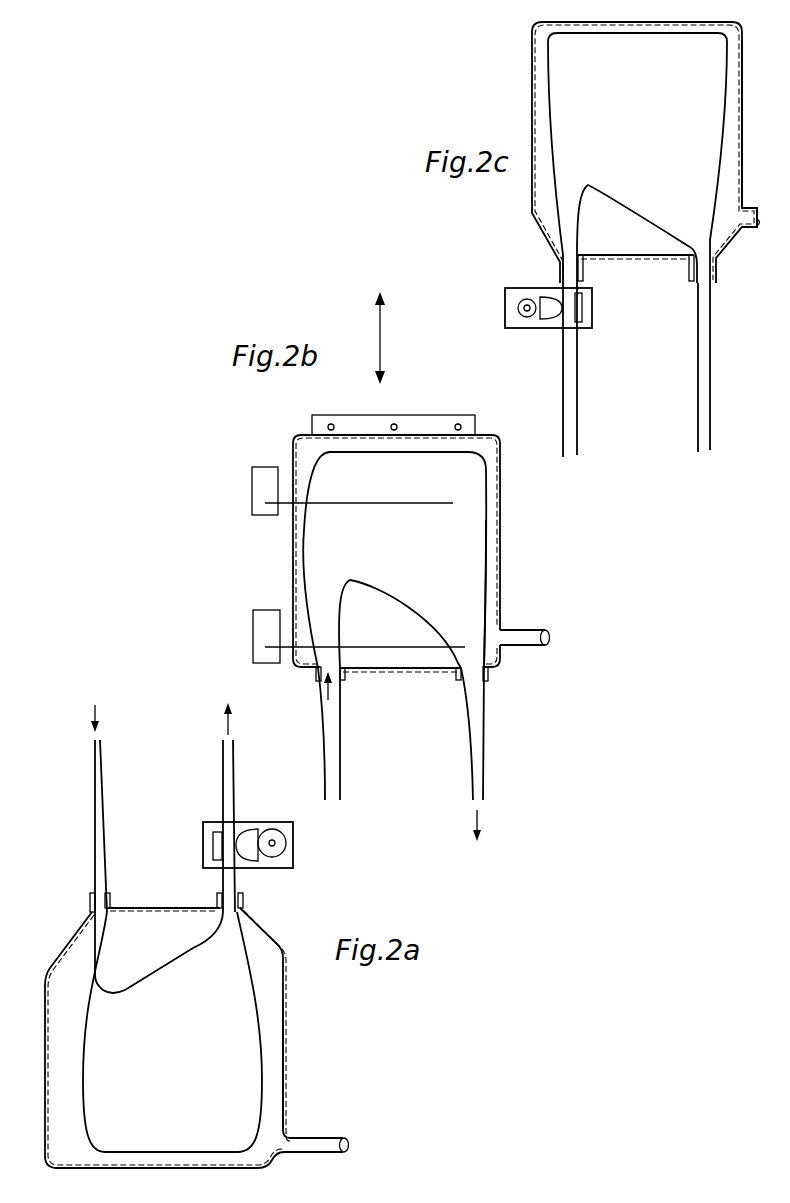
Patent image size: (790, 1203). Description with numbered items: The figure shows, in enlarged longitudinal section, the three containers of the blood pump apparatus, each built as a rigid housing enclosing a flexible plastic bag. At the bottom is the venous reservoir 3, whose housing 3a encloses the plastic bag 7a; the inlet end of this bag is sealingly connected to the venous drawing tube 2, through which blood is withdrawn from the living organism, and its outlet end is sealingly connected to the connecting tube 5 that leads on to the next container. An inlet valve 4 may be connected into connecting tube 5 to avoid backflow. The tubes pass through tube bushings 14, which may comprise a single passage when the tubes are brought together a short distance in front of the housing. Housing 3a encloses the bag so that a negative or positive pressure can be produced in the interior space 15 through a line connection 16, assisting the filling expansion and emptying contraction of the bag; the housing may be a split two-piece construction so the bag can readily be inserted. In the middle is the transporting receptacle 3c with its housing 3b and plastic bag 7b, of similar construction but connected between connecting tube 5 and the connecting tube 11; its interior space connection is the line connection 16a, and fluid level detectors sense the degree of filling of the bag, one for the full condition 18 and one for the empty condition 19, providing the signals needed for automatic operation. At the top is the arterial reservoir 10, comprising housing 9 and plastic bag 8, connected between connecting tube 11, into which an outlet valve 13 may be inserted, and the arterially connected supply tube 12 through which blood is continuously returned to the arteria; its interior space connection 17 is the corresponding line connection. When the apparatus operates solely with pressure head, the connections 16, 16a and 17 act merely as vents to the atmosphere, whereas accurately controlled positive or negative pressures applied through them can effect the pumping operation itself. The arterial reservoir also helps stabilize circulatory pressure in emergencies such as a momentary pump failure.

In FIG. 2A, the drawing tube 2 is at (104, 795).
In FIG. 2A, the venous reservoir 3 is at (365, 1021).
In FIG. 2A, the housing of the venous reservoir 3a is at (309, 1078).
In FIG. 2B, the housing of the transporting receptacle 3b is at (276, 572).
In FIG. 2B, the transporting receptacle 3c is at (250, 441).
In FIG. 2A, the inlet valve 4 is at (266, 822).
In FIG. 2B, the connecting tube 5 is at (342, 787).
In FIG. 2A, the connecting tube 5 is at (223, 760).
In FIG. 2A, the plastic bag 7a is at (258, 1032).
In FIG. 2B, the plastic bag 7b is at (488, 603).
In FIG. 2C, the plastic bag 8 is at (728, 43).
In FIG. 2C, the housing 9 is at (745, 123).
In FIG. 2C, the arterial reservoir 10 is at (516, 121).
In FIG. 2C, the connecting tube 11 is at (577, 394).
In FIG. 2B, the connecting tube 11 is at (472, 769).
In FIG. 2C, the arterial supply tube 12 is at (698, 386).
In FIG. 2C, the outlet valve 13 is at (521, 279).
In FIG. 2C, the tube bushings 14 is at (584, 268).
In FIG. 2B, the tube bushings 14 is at (346, 676).
In FIG. 2A, the tube bushings 14 is at (110, 893).
In FIG. 2C, the interior space 15 is at (727, 185).
In FIG. 2B, the interior space 15 is at (489, 444).
In FIG. 2A, the interior space 15 is at (73, 952).
In FIG. 2A, the line connection 16 is at (328, 1138).
In FIG. 2B, the line connection 16a is at (540, 632).
In FIG. 2C, the interior space connection 17 is at (758, 228).
In FIG. 2B, the fluid level detector (full condition) 18 is at (242, 489).
In FIG. 2B, the fluid level detector (empty condition) 19 is at (242, 639).